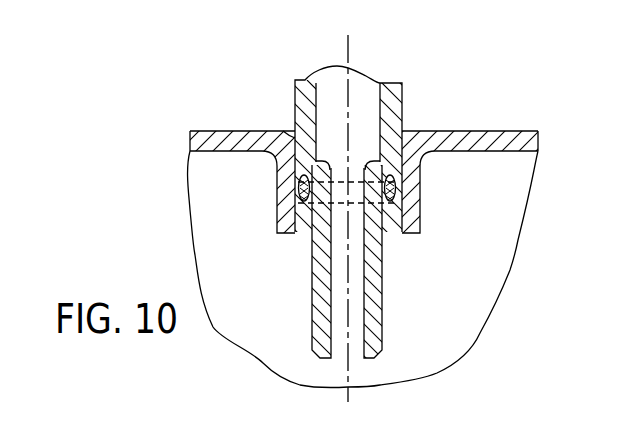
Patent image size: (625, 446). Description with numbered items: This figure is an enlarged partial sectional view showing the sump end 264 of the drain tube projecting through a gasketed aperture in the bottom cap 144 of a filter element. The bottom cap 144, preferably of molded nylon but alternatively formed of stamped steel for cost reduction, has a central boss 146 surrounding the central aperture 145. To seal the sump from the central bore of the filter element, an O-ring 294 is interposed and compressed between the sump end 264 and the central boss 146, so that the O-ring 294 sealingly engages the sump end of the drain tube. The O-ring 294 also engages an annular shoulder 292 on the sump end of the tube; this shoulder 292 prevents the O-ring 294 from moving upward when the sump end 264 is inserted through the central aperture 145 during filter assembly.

The bottom cap 144 is at (248, 140).
The central aperture 145 is at (287, 120).
The central boss 146 is at (411, 213).
The annular shoulder 292 is at (403, 117).
The O-ring 294 is at (300, 198).
The sump end 264 is at (373, 320).